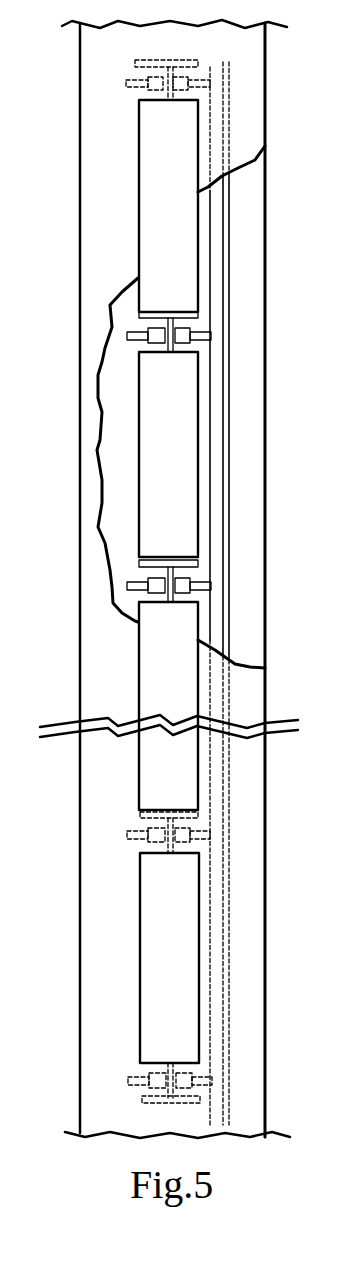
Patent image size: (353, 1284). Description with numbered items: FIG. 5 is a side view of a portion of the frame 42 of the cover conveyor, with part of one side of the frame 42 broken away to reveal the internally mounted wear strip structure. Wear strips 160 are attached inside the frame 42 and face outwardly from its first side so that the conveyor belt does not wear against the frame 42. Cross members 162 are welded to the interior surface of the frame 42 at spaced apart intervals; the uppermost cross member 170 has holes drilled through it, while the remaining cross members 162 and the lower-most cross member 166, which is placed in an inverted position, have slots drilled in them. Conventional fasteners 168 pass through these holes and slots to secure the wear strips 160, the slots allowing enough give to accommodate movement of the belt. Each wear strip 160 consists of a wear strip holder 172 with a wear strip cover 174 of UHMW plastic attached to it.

The frame 42 is at (97, 813).
The wear strip 160 is at (230, 245).
The cross member 162 is at (197, 324).
The lower-most cross member 166 is at (197, 1100).
The fastener 168 is at (203, 333).
The uppermost cross member 170 is at (140, 66).
The wear strip holder 172 is at (218, 428).
The wear strip cover 174 is at (227, 483).